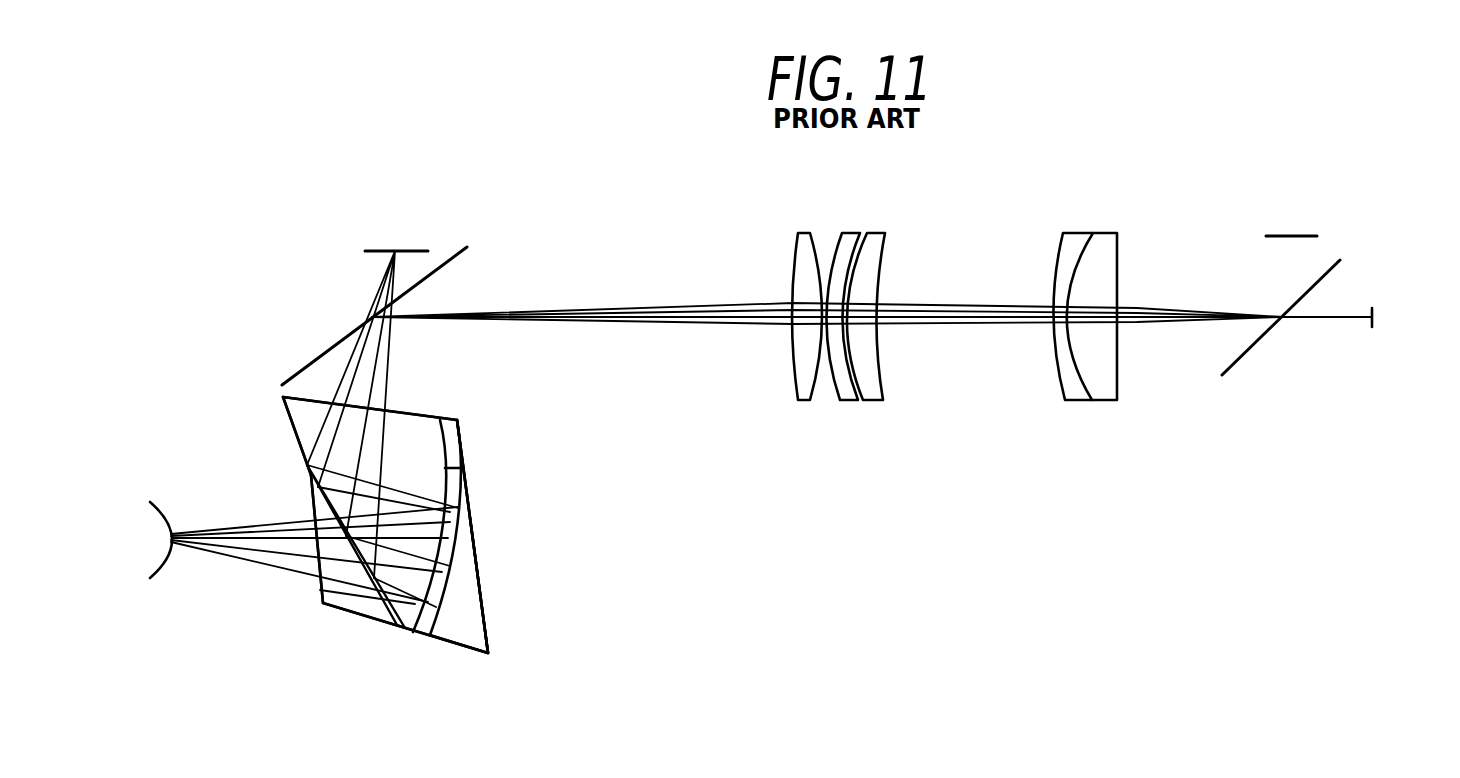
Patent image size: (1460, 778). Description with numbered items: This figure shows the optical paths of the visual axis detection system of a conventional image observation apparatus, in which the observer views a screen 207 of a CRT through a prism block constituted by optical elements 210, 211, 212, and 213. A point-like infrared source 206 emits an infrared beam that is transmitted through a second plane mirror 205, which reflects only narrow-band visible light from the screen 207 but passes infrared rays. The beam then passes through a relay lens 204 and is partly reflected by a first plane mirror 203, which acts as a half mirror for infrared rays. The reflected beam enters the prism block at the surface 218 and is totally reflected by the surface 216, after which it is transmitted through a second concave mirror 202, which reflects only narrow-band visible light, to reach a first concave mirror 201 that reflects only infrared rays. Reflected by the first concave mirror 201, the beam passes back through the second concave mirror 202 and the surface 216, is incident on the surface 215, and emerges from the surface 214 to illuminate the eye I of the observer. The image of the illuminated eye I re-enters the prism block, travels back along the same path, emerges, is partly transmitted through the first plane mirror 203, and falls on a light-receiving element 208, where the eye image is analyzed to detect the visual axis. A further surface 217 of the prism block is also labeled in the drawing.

The first concave mirror 201 is at (469, 518).
The second concave mirror 202 is at (462, 468).
The first plane mirror 203 is at (447, 257).
The relay lens 204 is at (1122, 216).
The second plane mirror 205 is at (1338, 265).
The point-like infrared source 206 is at (1372, 308).
The screen of a CRT 207 is at (1292, 236).
The light-receiving element 208 is at (378, 251).
The optical element 210 is at (343, 602).
The optical element 211 is at (415, 427).
The optical element 212 is at (450, 434).
The optical element 213 is at (462, 610).
The surface 214 is at (313, 571).
The surface 215 is at (303, 487).
The surface 216 is at (284, 410).
The prism face 217 is at (476, 562).
The surface 218 is at (403, 410).
The eye of the observer I is at (150, 580).